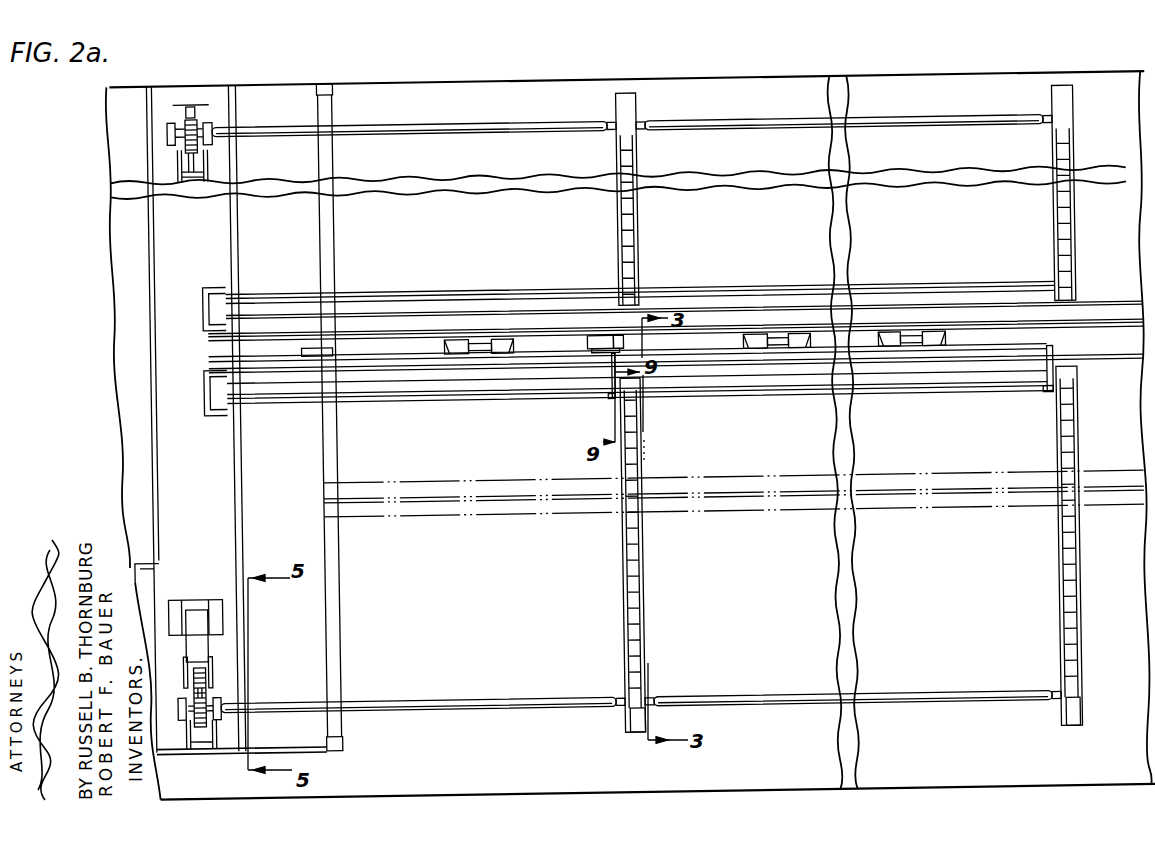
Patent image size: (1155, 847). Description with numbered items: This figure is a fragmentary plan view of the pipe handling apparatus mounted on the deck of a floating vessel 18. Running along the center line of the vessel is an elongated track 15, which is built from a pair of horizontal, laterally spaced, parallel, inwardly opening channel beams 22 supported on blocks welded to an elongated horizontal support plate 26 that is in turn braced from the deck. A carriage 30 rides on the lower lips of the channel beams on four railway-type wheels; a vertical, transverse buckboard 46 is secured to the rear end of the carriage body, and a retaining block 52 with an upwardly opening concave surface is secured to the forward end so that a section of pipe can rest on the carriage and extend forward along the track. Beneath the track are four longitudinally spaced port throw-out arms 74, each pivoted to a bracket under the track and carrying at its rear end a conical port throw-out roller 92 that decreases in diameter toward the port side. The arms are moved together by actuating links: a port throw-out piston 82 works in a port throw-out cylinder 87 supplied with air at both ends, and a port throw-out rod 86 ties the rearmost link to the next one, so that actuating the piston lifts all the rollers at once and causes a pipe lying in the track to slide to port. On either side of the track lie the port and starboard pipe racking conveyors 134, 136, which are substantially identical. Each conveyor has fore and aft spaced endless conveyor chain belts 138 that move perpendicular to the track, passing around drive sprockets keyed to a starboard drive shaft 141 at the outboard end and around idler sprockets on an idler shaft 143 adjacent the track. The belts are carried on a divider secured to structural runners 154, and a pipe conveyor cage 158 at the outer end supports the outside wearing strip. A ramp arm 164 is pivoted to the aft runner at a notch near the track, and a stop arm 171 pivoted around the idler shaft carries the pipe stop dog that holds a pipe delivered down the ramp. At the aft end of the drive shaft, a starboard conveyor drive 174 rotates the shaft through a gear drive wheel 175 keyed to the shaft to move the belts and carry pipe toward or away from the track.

The elongated track 15 is at (385, 336).
The floating vessel 18 is at (938, 768).
The channel beams 22 is at (347, 338).
The support plate 26 is at (743, 369).
The carriage 30 is at (614, 336).
The buckboard 46 is at (602, 347).
The retaining block 52 is at (603, 349).
The port throw-out arms 74 is at (472, 338).
The port throw-out piston 82 is at (358, 356).
The port throw-out rod 86 is at (537, 354).
The port throw-out cylinder 87 is at (312, 358).
The port throw-out roller 92 is at (446, 338).
The port pipe racking conveyor 134 is at (648, 268).
The starboard pipe racking conveyor 136 is at (662, 603).
The endless conveyor chain belts 138 is at (630, 674).
The starboard drive shaft 141 is at (718, 693).
The idler shaft 143 is at (975, 393).
The structural runners 154 is at (625, 526).
The pipe conveyor cage 158 is at (627, 722).
The ramp arm 164 is at (613, 394).
The stop arm 171 is at (614, 402).
The starboard conveyor drive 174 is at (218, 621).
The gear drive wheel 175 is at (192, 112).